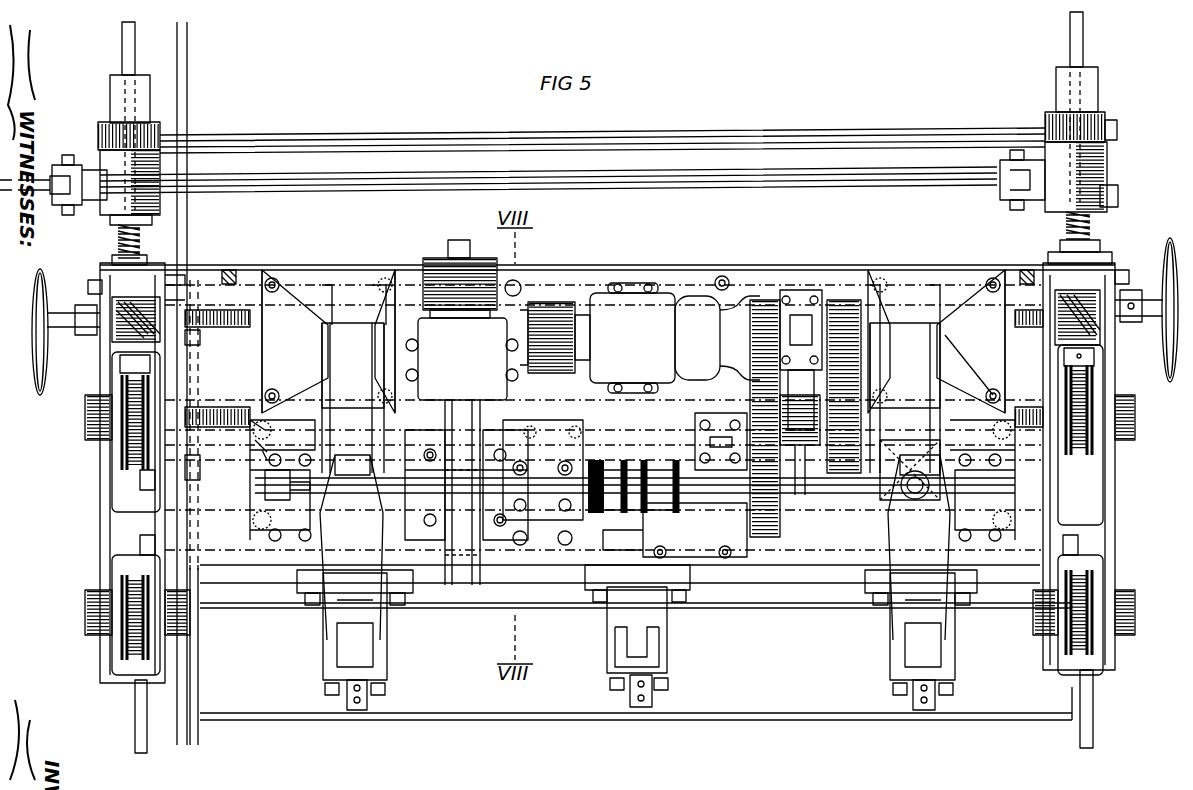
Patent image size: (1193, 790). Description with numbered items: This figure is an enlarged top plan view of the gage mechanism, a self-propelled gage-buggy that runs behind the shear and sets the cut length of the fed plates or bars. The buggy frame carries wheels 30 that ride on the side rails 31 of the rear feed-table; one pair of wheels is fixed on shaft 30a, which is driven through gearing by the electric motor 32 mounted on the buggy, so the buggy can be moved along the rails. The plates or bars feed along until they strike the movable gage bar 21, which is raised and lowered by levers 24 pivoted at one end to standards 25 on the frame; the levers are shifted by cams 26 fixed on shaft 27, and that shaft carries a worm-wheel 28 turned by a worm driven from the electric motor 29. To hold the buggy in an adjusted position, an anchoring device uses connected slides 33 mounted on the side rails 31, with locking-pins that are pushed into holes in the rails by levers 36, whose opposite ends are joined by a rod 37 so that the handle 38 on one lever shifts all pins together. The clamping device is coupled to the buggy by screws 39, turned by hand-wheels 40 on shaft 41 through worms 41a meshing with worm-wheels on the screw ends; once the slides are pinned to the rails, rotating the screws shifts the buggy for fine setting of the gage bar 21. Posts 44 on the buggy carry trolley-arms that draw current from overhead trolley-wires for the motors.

The gage bar 21 is at (675, 713).
The levers 24 is at (322, 357).
The standards 25 is at (346, 365).
The cams 26 is at (358, 528).
The shaft 27 is at (692, 505).
The worm-wheel 28 is at (465, 572).
The electric motor 29 is at (462, 320).
The wheels 30 is at (120, 450).
The shaft 30a is at (234, 426).
The side rails 31 is at (122, 48).
The electric motor 32 is at (640, 338).
The slides 33 is at (110, 105).
The levers 36 is at (76, 210).
The rod 37 is at (405, 194).
The handle 38 is at (30, 174).
The screws 39 is at (118, 252).
The hand-wheels 40 is at (36, 278).
The shaft 41 is at (233, 320).
The worms 41a is at (124, 336).
The posts 44 is at (230, 268).